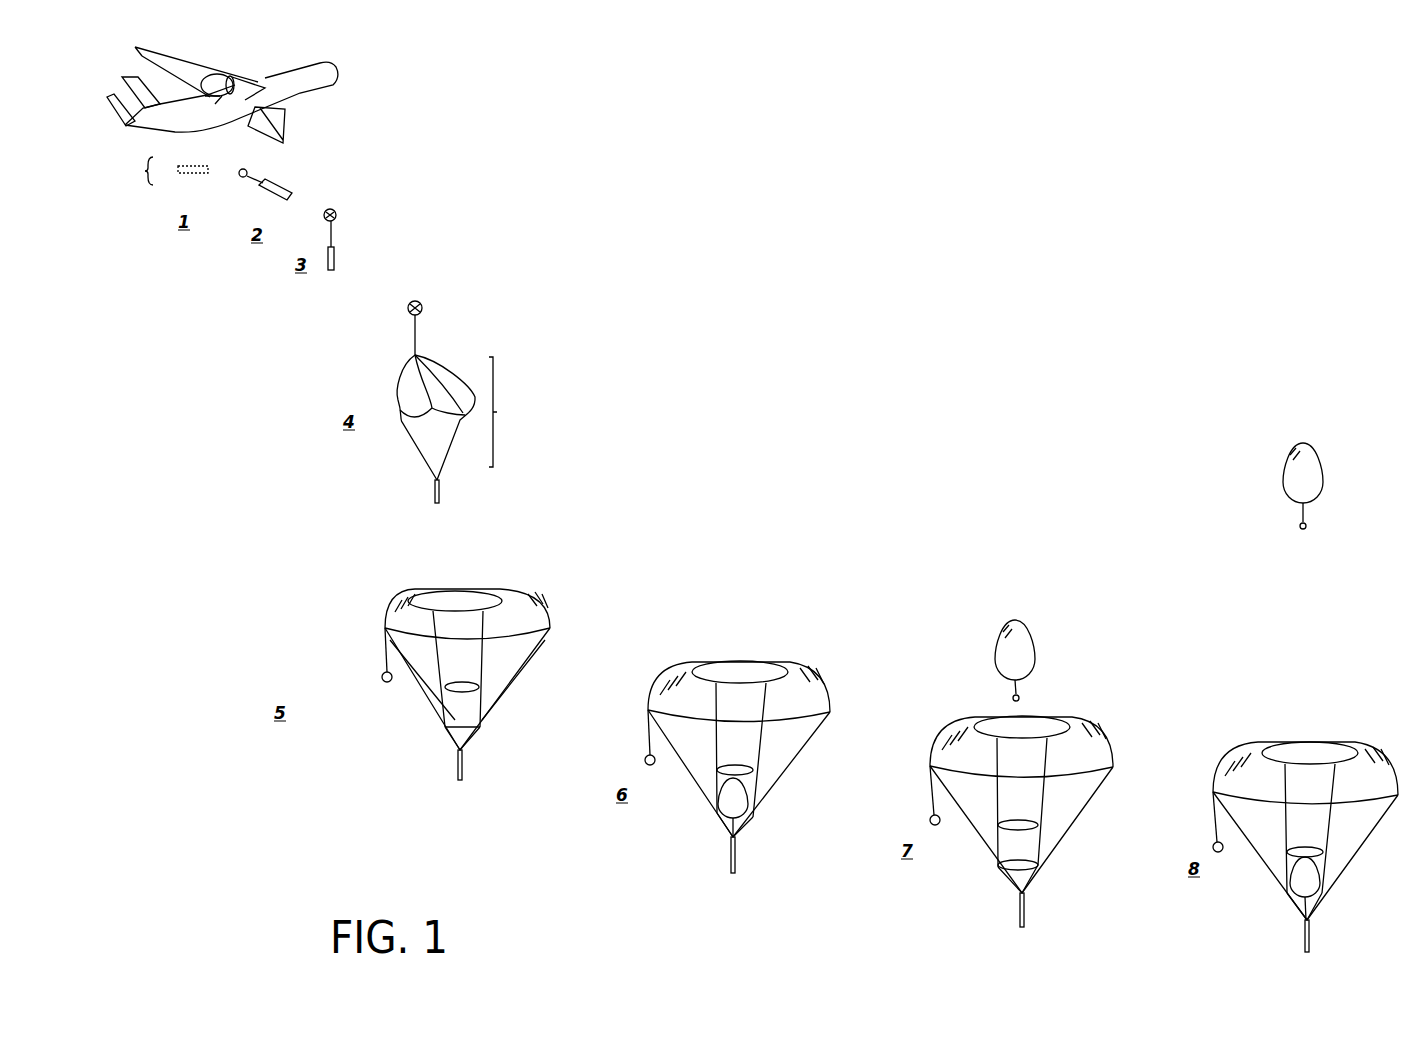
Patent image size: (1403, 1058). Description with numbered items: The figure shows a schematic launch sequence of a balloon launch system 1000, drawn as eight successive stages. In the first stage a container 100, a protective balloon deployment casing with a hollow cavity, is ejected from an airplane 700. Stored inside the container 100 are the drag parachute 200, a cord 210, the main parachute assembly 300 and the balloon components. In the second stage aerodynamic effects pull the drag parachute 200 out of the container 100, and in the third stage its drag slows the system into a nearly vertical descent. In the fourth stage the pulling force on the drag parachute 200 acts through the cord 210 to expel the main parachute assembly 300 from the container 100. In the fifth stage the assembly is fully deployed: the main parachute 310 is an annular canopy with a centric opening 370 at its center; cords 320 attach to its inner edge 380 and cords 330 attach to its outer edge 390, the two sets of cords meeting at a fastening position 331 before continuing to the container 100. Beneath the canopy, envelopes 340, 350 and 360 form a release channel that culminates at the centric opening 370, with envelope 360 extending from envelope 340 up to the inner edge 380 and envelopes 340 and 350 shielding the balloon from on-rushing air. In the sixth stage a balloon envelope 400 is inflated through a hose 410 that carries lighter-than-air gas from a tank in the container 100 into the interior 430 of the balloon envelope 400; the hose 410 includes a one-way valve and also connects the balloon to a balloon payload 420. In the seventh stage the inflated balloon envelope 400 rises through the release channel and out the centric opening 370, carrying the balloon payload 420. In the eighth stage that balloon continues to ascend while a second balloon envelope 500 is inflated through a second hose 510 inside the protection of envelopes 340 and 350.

The airplane 700 is at (182, 55).
The balloon launch system 1000 is at (131, 171).
The container 100 is at (1303, 947).
The drag parachute 200 is at (249, 170).
The cord 210 is at (268, 178).
The main parachute assembly 300 is at (497, 412).
The main parachute 310 is at (527, 600).
The cords 320 is at (442, 673).
The cords 330 is at (532, 655).
The fastening position 331 is at (442, 723).
The envelope 340 is at (485, 712).
The envelope 350 is at (475, 737).
The envelope 360 is at (468, 662).
The centric opening 370 is at (457, 600).
The inner edge 380 is at (450, 637).
The outer edge 390 is at (490, 627).
The balloon envelope 400 is at (1285, 468).
The hose 410 is at (1300, 512).
The balloon payload 420 is at (1307, 522).
The interior 430 is at (1310, 458).
The balloon envelope 500 is at (1292, 897).
The hose 510 is at (1295, 913).